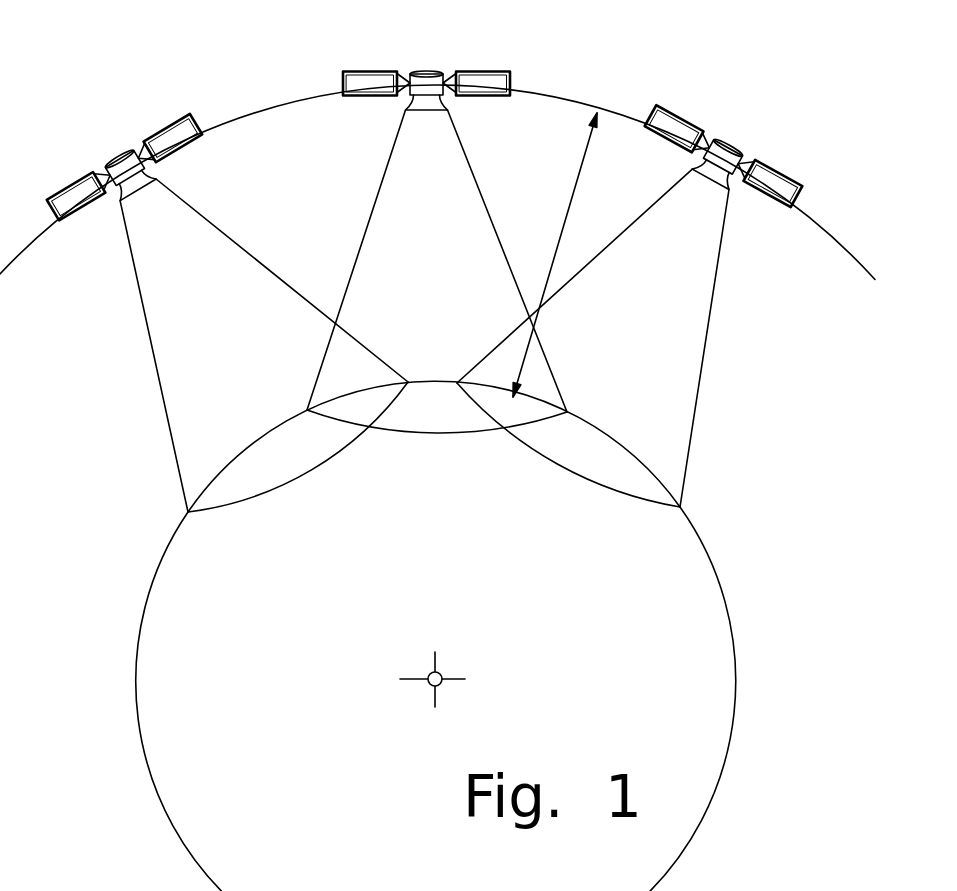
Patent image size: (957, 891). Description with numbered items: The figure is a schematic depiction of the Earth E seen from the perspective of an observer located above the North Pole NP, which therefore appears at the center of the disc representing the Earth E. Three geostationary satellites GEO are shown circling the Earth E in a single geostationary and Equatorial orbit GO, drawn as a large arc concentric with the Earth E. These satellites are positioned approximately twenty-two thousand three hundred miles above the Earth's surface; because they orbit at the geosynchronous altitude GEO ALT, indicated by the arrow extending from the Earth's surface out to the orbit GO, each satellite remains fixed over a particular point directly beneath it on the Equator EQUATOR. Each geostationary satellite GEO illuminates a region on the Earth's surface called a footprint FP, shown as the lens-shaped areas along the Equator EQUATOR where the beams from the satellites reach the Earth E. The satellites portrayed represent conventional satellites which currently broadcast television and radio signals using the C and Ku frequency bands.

The geostationary satellite GEO is at (427, 71).
The geostationary Equatorial orbit GO is at (233, 120).
The geosynchronous altitude GEO ALT is at (560, 227).
The Earth E is at (729, 623).
The Equator EQUATOR is at (434, 440).
The footprint FP is at (260, 493).
The North Pole NP is at (449, 667).